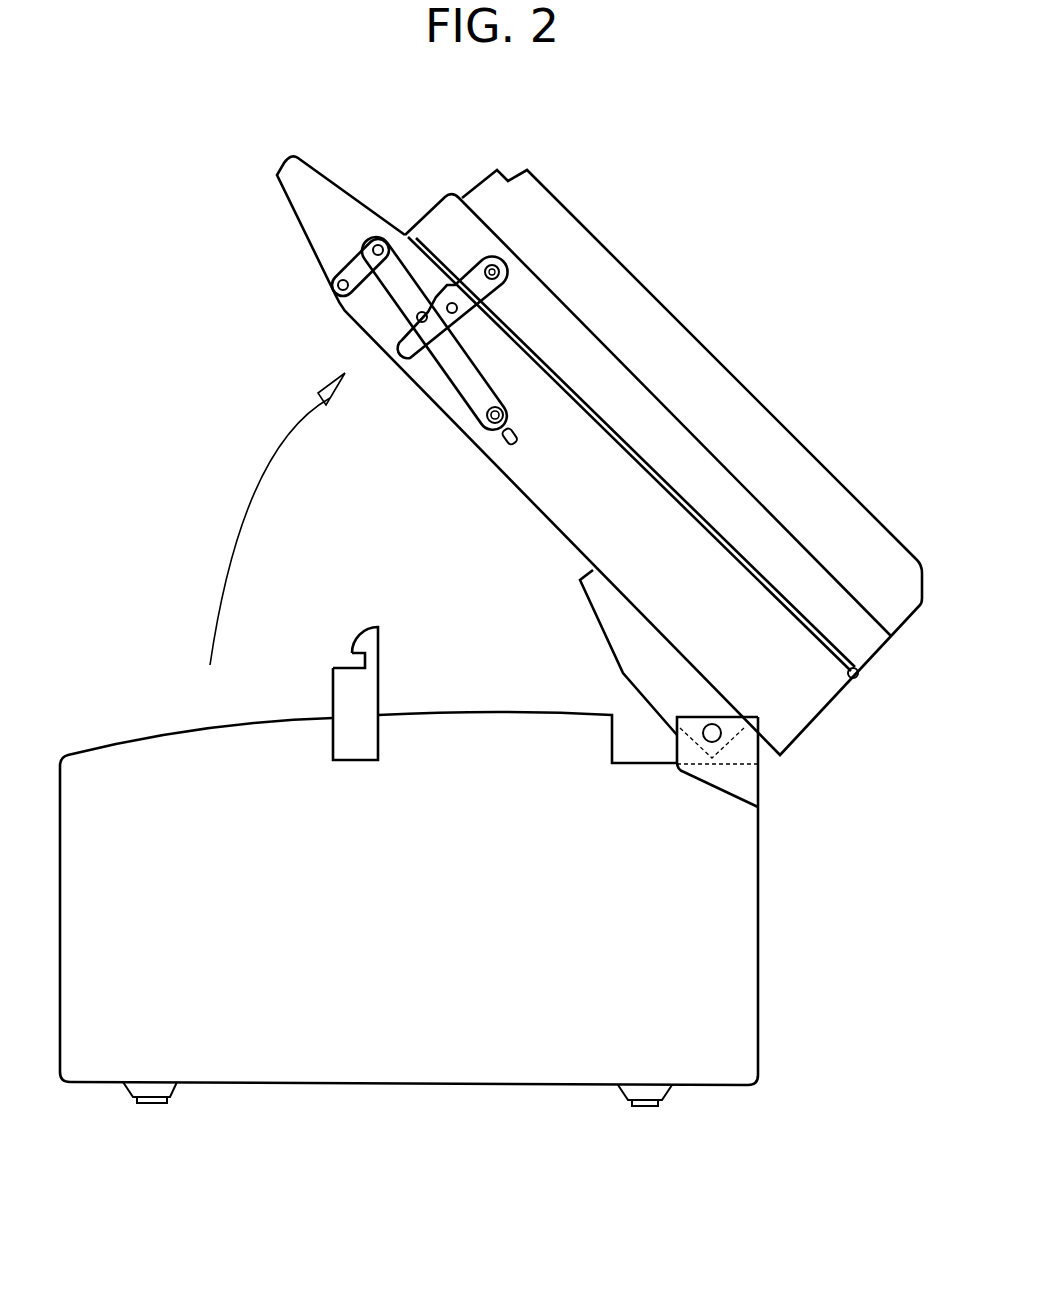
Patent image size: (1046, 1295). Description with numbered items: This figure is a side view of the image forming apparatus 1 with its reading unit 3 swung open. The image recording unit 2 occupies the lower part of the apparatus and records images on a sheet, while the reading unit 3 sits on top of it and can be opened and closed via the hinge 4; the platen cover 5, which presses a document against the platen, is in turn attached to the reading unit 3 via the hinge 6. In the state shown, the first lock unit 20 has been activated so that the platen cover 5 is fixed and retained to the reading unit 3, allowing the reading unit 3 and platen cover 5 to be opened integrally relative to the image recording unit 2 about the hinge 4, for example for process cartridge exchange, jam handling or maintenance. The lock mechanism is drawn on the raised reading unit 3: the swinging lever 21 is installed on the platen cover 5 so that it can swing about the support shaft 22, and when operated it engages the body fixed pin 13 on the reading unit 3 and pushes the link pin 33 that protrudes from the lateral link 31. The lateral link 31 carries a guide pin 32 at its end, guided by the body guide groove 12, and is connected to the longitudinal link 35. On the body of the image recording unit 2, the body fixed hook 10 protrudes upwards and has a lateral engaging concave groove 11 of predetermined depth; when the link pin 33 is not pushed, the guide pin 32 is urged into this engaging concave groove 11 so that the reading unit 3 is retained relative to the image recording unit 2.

The image forming apparatus 1 is at (358, 1118).
The image recording unit 2 is at (414, 950).
The reading unit 3 is at (567, 515).
The hinge 4 is at (715, 745).
The platen cover 5 is at (720, 373).
The hinge 6 is at (858, 678).
The body fixed hook 10 is at (365, 688).
The engaging concave groove 11 is at (355, 662).
The body guide groove 12 is at (521, 441).
The body fixed pin 13 is at (458, 308).
The first lock unit 20 is at (451, 256).
The swinging lever 21 is at (423, 337).
The support shaft 22 is at (496, 268).
The lateral link 31 is at (465, 380).
The guide pin 32 is at (506, 415).
The link pin 33 is at (416, 318).
The longitudinal link 35 is at (358, 267).